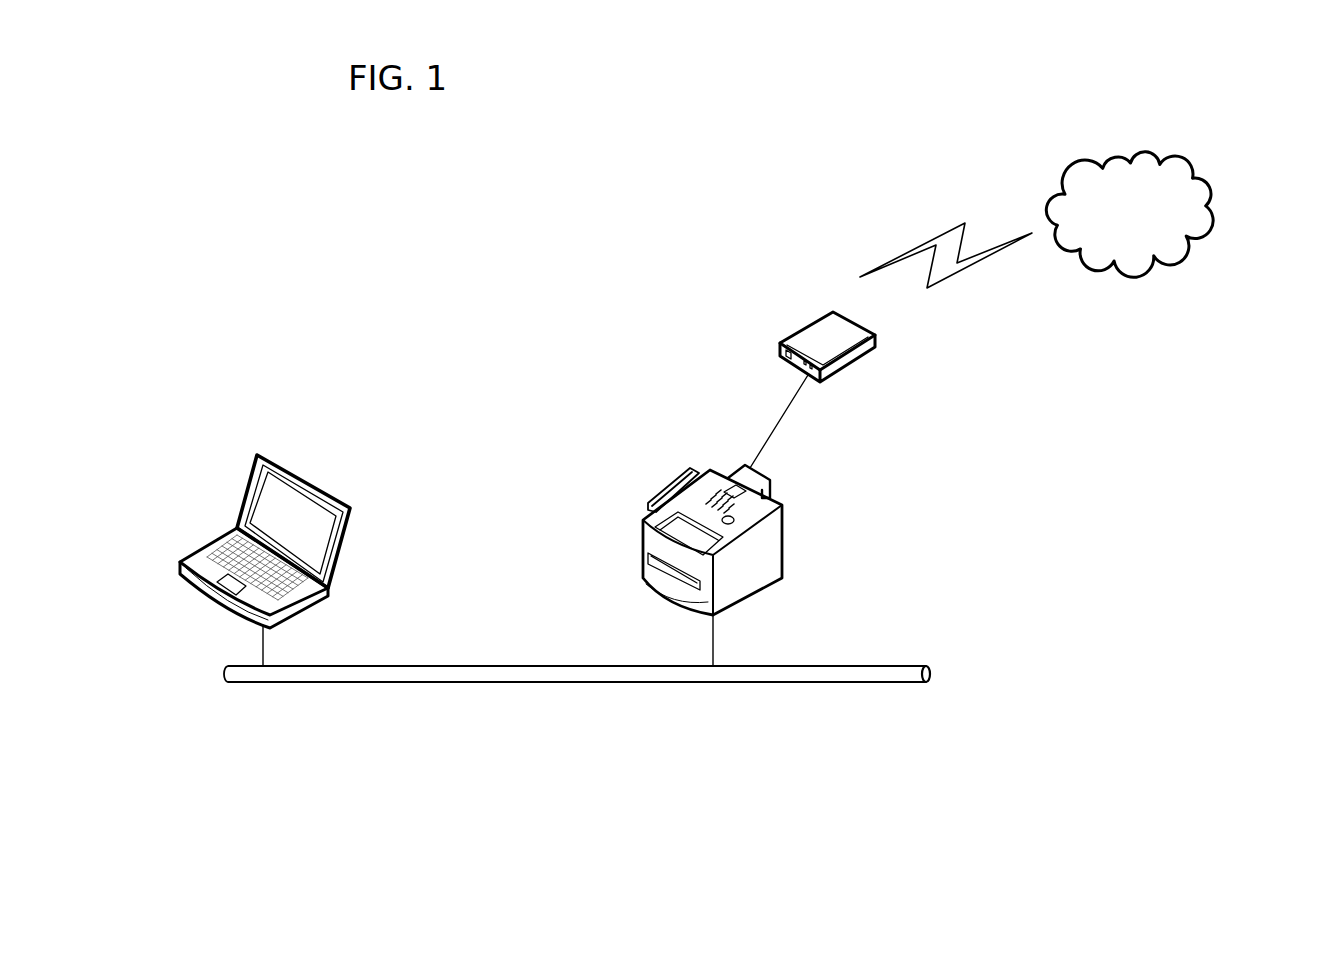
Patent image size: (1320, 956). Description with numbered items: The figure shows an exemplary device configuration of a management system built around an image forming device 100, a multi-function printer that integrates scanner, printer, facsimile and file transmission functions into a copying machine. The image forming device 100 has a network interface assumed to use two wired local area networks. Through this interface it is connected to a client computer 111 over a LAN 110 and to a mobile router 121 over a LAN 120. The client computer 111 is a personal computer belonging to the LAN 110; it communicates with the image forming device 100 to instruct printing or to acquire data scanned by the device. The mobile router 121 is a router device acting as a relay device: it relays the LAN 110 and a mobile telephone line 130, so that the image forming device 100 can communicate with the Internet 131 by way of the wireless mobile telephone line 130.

The image forming device 100 is at (782, 533).
The LAN 110 is at (880, 666).
The client computer 111 is at (318, 483).
The LAN 120 is at (775, 433).
The mobile router 121 is at (875, 340).
The mobile telephone line 130 is at (903, 253).
The Internet 131 is at (1167, 260).